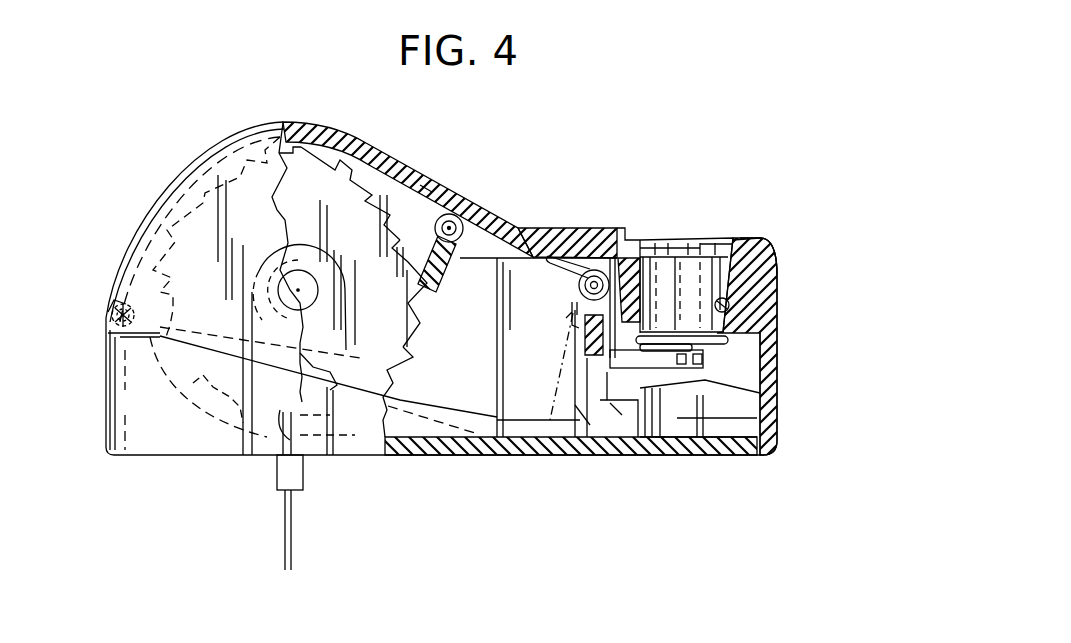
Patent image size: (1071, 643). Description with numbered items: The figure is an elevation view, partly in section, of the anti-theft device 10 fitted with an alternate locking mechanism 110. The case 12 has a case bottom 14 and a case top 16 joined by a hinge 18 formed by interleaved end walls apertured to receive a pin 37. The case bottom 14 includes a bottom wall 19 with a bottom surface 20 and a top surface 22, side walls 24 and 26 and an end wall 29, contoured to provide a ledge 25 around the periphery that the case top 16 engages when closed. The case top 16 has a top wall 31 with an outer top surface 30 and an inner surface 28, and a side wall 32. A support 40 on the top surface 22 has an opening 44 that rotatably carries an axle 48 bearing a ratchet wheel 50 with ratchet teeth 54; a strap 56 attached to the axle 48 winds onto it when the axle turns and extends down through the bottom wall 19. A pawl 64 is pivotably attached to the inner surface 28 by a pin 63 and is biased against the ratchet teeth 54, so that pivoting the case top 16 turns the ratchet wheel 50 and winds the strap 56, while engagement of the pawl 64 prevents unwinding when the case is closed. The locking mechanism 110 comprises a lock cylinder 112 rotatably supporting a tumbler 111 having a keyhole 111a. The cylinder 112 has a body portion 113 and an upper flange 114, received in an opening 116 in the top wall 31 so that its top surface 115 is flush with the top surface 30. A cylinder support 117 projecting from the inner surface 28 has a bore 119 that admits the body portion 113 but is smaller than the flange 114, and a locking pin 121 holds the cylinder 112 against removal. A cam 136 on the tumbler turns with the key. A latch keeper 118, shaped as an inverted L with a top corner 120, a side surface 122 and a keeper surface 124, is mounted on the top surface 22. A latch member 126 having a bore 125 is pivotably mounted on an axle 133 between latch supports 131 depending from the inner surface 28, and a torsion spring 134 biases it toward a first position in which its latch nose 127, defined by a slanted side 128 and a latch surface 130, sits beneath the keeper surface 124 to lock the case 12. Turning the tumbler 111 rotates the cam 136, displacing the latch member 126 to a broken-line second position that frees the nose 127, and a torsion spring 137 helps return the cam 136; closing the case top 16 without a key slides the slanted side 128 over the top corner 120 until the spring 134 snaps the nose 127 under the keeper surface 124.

The anti-theft device 10 is at (287, 93).
The case 12 is at (225, 133).
The case bottom 14 is at (163, 452).
The case top 16 is at (545, 222).
The hinge 18 is at (105, 297).
The bottom wall 19 is at (500, 457).
The bottom surface 20 is at (455, 457).
The top surface 22 is at (422, 430).
The side wall 24 is at (227, 440).
The ledge 25 is at (778, 428).
The side wall 26 is at (688, 437).
The inner surface 28 is at (509, 221).
The end wall 29 is at (753, 458).
The top surface 30 is at (616, 258).
The top wall 31 is at (427, 187).
The side wall 32 is at (207, 248).
The pin 37 is at (108, 308).
The support 40 is at (342, 335).
The opening 44 is at (323, 283).
The axle 48 is at (303, 273).
The ratchet wheel 50 is at (323, 188).
The ratchet teeth 54 is at (381, 250).
The strap 56 is at (287, 548).
The pin 63 is at (450, 220).
The pawl 64 is at (420, 278).
The locking mechanism 110 is at (703, 397).
The tumbler 111 is at (760, 243).
The keyhole 111a is at (694, 240).
The lock cylinder 112 is at (700, 331).
The body portion 113 is at (740, 273).
The flange 114 is at (737, 244).
The top surface 115 is at (725, 238).
The opening 116 is at (633, 270).
The cylinder support 117 is at (735, 293).
The latch keeper 118 is at (658, 437).
The bore 119 is at (645, 335).
The top corner 120 is at (617, 373).
The locking pin 121 is at (726, 304).
The side surface 122 is at (617, 384).
The keeper surface 124 is at (640, 422).
The bore 125 is at (577, 300).
The latch member 126 is at (590, 430).
The latch nose 127 is at (618, 407).
The slanted side 128 is at (637, 407).
The latch surface 130 is at (733, 387).
The latch support 131 is at (600, 266).
The axle 133 is at (577, 285).
The torsion spring 134 is at (562, 250).
The cam 136 is at (657, 352).
The torsion spring 137 is at (735, 348).